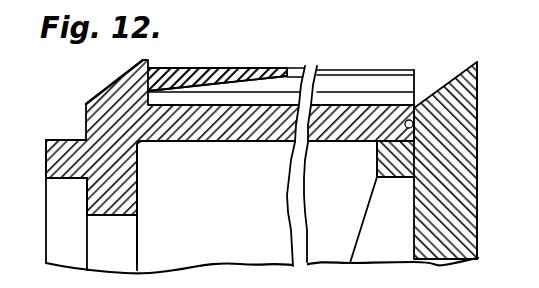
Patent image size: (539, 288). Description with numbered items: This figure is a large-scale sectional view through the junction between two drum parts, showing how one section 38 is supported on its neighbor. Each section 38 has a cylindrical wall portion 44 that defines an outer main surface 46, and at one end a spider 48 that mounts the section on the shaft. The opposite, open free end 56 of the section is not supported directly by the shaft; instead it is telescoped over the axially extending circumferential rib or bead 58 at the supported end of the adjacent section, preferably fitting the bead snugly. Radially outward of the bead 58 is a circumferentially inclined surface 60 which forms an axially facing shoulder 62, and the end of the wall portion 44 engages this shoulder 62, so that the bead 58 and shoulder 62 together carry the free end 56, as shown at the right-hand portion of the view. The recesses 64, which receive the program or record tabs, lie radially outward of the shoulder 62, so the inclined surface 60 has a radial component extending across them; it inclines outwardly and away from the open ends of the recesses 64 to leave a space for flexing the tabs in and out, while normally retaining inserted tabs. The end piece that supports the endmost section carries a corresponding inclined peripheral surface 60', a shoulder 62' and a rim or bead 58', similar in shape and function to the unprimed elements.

The section 38 is at (303, 67).
The cylindrical wall portion 44 is at (204, 142).
The outer main surface 46 is at (231, 68).
The spider 48 is at (139, 242).
The free end 56 is at (416, 69).
The rib or bead 58 is at (47, 159).
The rim or bead 58' is at (363, 202).
The inclined surface 60 is at (99, 82).
The inclined peripheral surface 60' is at (443, 146).
The shoulder 62 is at (218, 137).
The shoulder 62' is at (462, 124).
The recess 64 is at (334, 85).